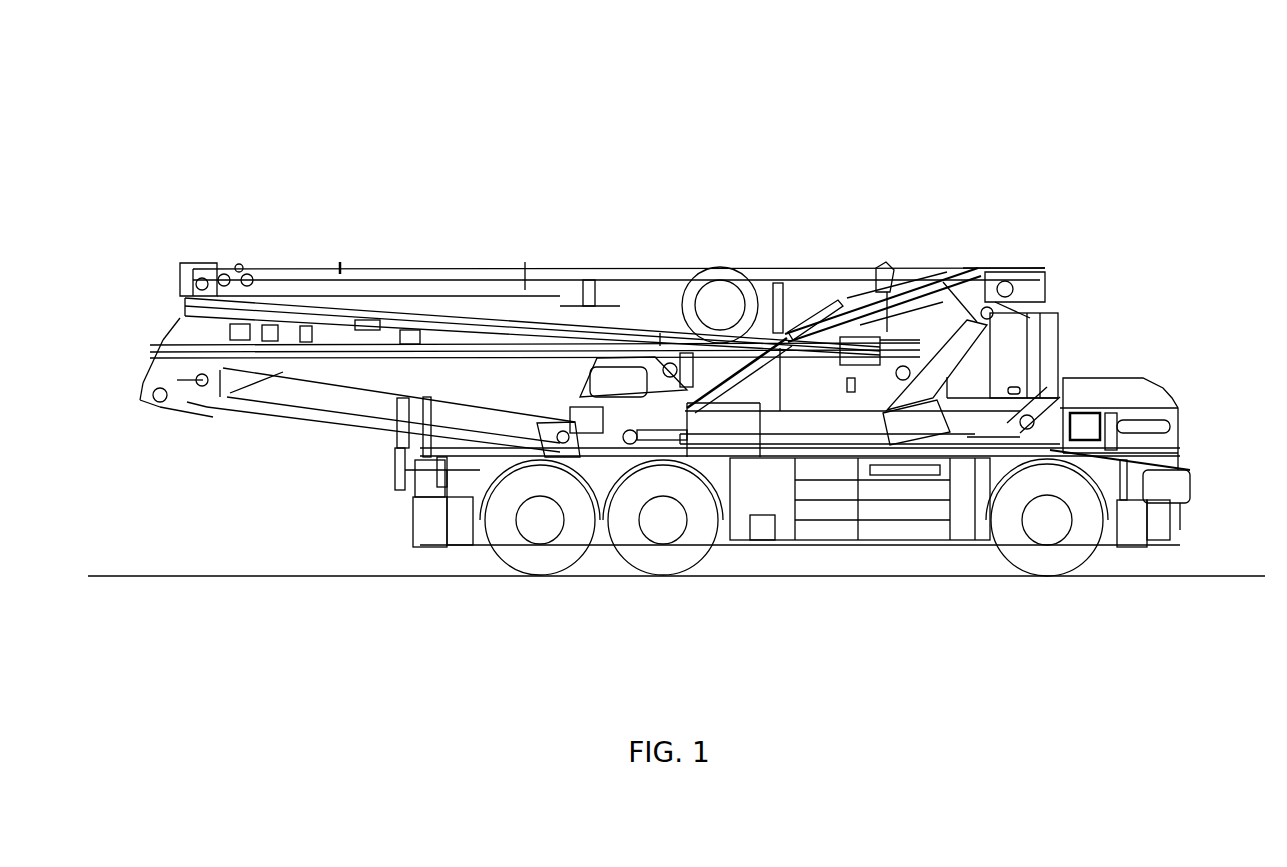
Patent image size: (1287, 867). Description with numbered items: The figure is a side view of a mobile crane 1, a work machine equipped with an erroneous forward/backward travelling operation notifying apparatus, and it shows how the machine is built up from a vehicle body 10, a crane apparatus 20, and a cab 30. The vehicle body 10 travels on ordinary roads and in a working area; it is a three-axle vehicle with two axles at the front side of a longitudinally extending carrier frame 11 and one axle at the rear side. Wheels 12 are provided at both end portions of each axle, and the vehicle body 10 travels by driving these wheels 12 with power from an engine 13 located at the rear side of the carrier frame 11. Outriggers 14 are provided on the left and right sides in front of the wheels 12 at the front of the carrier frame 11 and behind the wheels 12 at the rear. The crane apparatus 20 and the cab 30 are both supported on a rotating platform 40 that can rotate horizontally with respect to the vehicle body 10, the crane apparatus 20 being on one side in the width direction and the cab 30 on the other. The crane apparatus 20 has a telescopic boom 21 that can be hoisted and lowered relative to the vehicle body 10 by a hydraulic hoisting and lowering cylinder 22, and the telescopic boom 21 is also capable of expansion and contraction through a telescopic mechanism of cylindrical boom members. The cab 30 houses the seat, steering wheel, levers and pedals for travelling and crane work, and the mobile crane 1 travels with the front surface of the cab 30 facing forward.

The mobile crane 1 is at (942, 163).
The vehicle body 10 is at (812, 556).
The carrier frame 11 is at (728, 578).
The wheels 12 is at (645, 556).
The engine 13 is at (1170, 418).
The outriggers 14 is at (425, 580).
The crane apparatus 20 is at (662, 255).
The telescopic boom 21 is at (632, 296).
The hydraulic hoisting and lowering cylinder 22 is at (704, 372).
The cab 30 is at (575, 398).
The rotating platform 40 is at (797, 365).